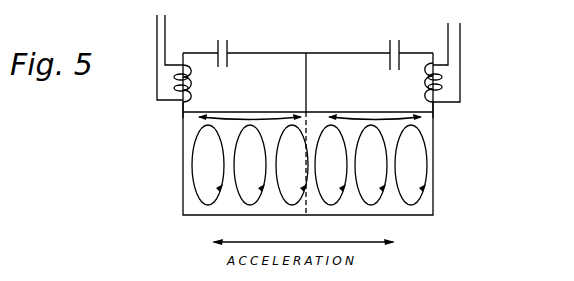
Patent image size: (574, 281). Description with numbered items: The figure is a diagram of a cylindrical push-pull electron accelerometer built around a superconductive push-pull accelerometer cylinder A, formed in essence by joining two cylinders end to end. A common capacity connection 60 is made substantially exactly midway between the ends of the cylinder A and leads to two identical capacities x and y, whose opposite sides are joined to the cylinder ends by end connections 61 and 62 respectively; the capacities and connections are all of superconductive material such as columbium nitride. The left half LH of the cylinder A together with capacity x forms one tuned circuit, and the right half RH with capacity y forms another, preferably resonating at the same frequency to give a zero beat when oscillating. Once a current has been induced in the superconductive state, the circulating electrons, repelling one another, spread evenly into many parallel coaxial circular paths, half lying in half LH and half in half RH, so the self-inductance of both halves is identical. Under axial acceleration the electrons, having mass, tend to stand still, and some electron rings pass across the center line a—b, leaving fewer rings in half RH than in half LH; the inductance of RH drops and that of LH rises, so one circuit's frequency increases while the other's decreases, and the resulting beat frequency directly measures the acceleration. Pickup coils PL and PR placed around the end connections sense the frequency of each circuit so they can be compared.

The common capacity connection 60 is at (308, 82).
The end connection 61 is at (182, 105).
The end connection 62 is at (433, 107).
The pickup coil PL is at (177, 82).
The pickup coil PR is at (438, 82).
The capacity x is at (229, 52).
The capacity y is at (389, 52).
The center line end point a is at (314, 120).
The center line end point b is at (313, 209).
The left half of cylinder LH is at (267, 217).
The right half of cylinder RH is at (402, 215).
The push-pull accelerometer cylinder A is at (295, 215).